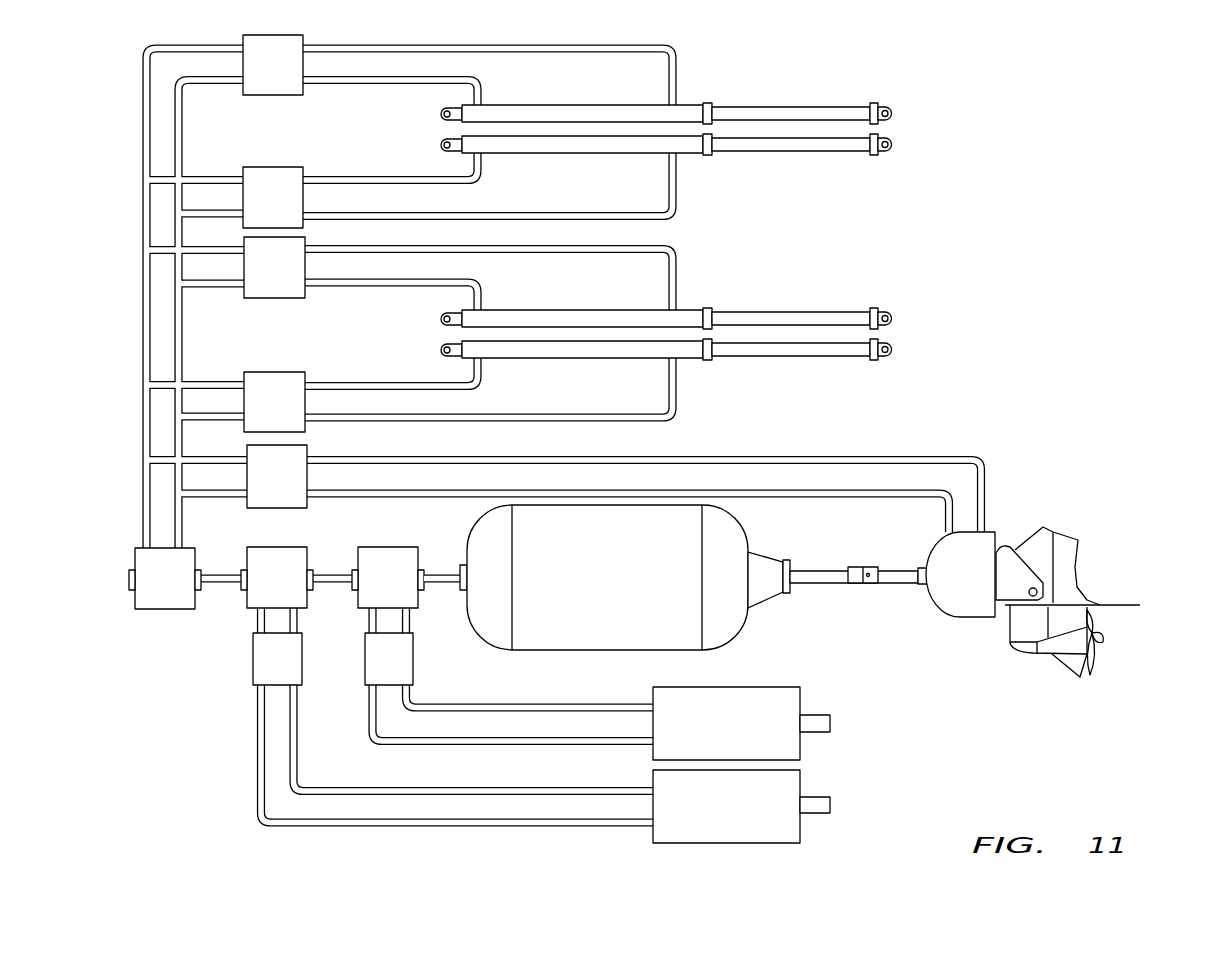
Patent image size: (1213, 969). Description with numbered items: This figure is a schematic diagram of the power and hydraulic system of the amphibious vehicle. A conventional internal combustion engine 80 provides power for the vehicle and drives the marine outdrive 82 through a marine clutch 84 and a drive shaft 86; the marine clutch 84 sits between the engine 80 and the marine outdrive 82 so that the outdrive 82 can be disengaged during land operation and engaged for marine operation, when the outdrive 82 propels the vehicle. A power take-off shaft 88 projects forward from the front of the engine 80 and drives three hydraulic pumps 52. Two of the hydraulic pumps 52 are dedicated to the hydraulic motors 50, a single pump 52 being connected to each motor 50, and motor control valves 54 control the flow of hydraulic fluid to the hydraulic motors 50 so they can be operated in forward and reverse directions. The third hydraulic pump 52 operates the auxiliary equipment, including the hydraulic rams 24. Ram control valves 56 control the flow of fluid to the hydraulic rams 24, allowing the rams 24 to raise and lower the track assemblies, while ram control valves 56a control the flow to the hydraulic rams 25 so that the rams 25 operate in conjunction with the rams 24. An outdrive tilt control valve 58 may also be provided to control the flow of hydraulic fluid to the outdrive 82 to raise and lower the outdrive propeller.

The hydraulic rams 24 is at (692, 308).
The hydraulic rams 25 is at (692, 104).
The hydraulic motors 50 is at (741, 745).
The hydraulic pumps 52 is at (180, 593).
The motor control valves 54 is at (292, 667).
The ram control valves 56 is at (290, 281).
The ram control valves 56a is at (295, 78).
The outdrive tilt control valve 58 is at (292, 490).
The internal combustion engine 80 is at (616, 590).
The marine outdrive 82 is at (1066, 478).
The marine clutch 84 is at (778, 590).
The drive shaft 86 is at (824, 567).
The power take-off shaft 88 is at (437, 568).